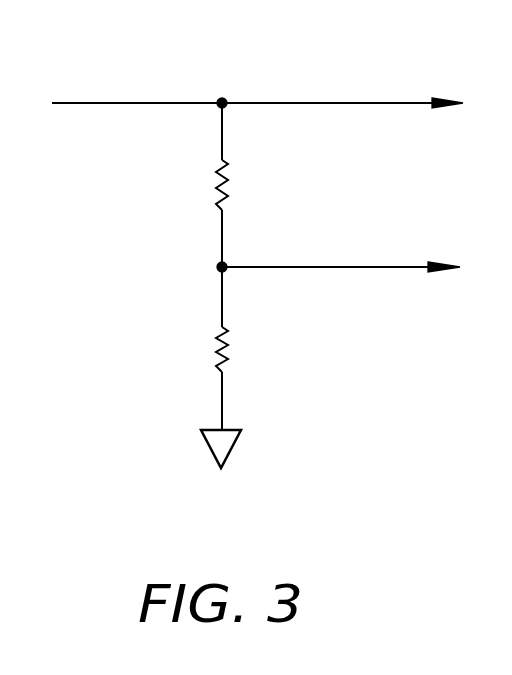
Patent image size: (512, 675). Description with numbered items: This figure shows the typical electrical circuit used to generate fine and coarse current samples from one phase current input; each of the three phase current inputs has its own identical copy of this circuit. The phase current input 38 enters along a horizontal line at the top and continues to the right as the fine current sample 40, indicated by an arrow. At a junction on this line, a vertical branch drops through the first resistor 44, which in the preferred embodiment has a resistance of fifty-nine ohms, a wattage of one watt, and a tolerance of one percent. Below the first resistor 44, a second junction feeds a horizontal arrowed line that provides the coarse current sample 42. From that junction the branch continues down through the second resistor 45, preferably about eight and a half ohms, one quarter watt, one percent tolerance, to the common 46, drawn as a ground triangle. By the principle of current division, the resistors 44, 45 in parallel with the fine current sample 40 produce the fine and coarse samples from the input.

The phase current input 38 is at (90, 103).
The fine current sample 40 is at (393, 103).
The coarse current sample 42 is at (393, 268).
The first resistor 44 is at (213, 183).
The second resistor 45 is at (213, 348).
The common 46 is at (237, 444).